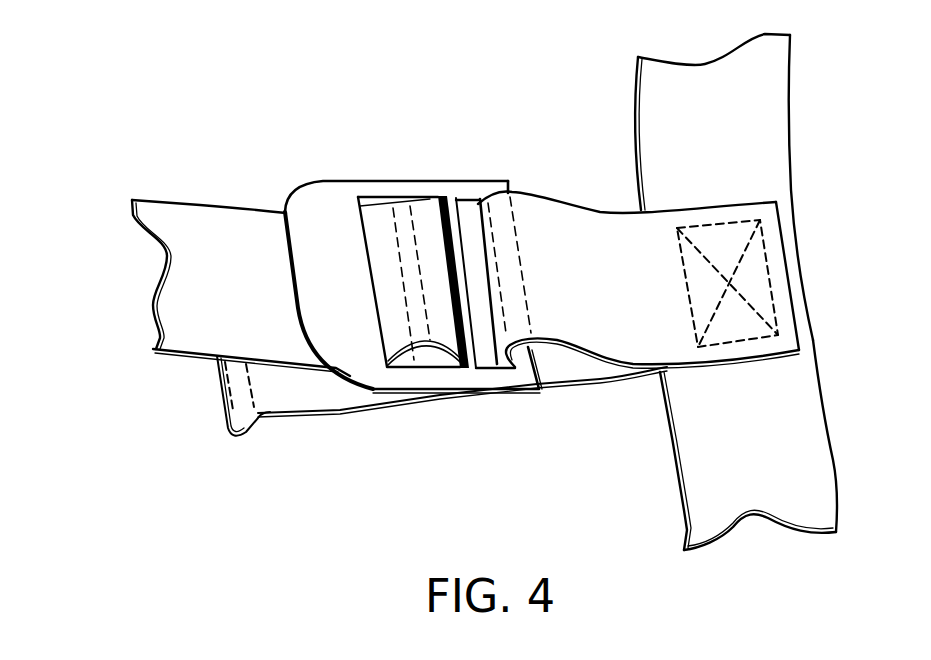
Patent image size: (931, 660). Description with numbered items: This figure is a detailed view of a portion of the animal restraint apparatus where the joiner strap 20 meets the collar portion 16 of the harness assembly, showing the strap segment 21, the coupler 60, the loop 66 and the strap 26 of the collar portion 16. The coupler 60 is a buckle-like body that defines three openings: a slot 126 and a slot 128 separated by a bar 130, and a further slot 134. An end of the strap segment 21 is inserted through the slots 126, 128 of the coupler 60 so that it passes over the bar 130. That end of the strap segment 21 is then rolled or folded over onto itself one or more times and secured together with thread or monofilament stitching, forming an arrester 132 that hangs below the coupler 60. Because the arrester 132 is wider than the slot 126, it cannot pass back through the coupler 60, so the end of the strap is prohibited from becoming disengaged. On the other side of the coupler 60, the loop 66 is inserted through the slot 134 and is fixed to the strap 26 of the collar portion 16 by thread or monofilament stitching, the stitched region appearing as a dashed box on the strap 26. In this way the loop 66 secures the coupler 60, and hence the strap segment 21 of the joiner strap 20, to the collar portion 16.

The collar portion 16 is at (829, 110).
The strap assembly 20 is at (122, 138).
The strap segment 21 is at (241, 249).
The strap 26 is at (794, 404).
The coupler 60 is at (412, 132).
The loop 66 is at (617, 239).
The slot 126 is at (399, 371).
The slot 128 is at (451, 372).
The bar 130 is at (428, 369).
The arrester 132 is at (261, 438).
The slot 134 is at (493, 370).